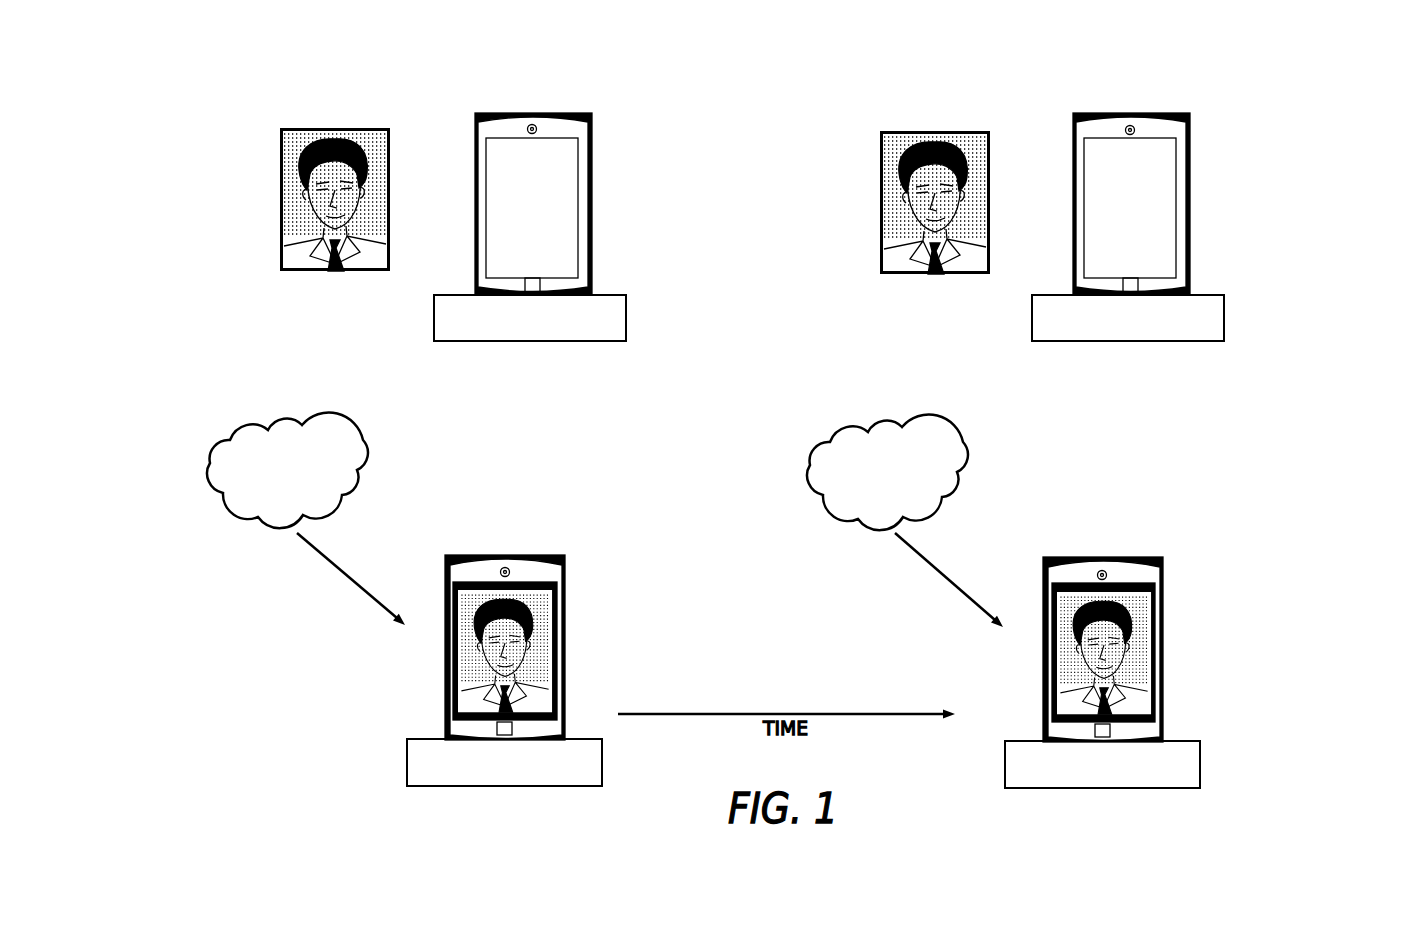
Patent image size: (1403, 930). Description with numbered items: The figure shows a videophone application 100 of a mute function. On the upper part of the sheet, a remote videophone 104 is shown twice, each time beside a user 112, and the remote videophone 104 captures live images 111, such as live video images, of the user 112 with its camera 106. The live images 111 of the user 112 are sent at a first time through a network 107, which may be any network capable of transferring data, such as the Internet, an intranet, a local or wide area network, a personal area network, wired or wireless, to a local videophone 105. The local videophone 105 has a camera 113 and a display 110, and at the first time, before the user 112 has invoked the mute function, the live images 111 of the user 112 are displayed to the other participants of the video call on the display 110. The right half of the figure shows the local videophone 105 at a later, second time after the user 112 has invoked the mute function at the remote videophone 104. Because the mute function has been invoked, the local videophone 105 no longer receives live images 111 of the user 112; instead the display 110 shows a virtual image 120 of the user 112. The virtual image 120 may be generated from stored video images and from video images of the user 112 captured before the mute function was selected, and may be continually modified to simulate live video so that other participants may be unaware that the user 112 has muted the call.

The videophone application 100 is at (798, 100).
The remote videophone 104 is at (772, 256).
The local videophone 105 is at (865, 612).
The camera 106 is at (542, 95).
The network 107 is at (910, 495).
The display 110 is at (874, 552).
The live images 111 is at (543, 637).
The user 112 is at (337, 128).
The camera 113 is at (1120, 530).
The virtual image 120 is at (1145, 638).